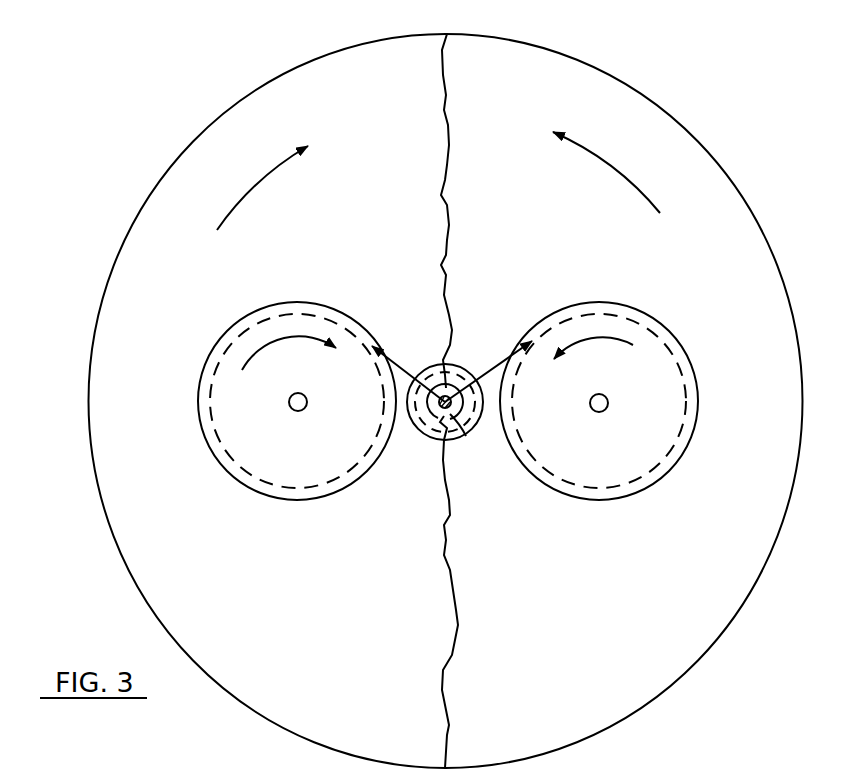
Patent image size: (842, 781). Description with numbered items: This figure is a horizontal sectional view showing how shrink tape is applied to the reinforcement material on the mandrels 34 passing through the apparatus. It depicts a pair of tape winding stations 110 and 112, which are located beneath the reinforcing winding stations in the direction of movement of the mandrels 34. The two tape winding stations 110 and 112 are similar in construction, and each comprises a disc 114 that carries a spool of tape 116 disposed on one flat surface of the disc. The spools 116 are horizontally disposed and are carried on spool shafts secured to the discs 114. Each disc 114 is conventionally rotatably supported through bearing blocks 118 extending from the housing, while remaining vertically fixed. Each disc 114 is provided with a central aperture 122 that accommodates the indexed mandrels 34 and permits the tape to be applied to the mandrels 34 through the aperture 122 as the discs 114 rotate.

The tape winding station 110 is at (280, 97).
The tape winding station 112 is at (715, 192).
The disc 114 is at (123, 428).
The spool of tape 116 is at (295, 473).
The bearing block 118 is at (305, 406).
The mandrel 34 is at (452, 387).
The central aperture 122 is at (468, 443).